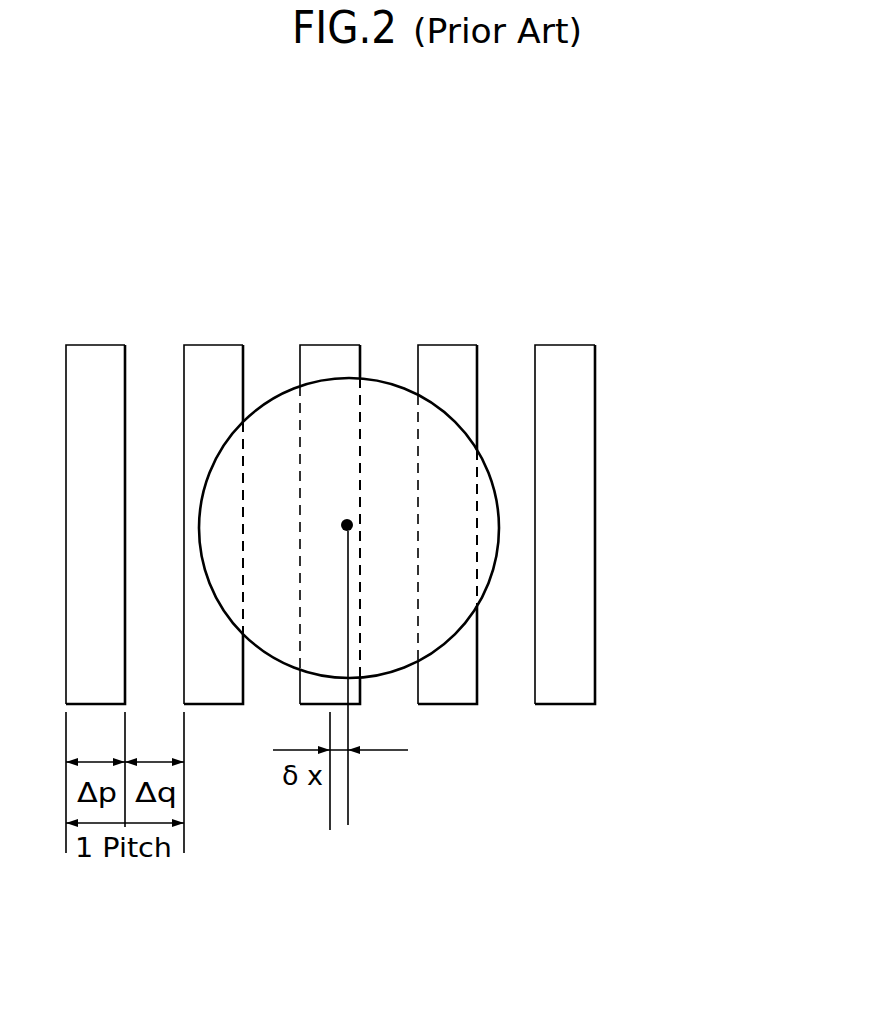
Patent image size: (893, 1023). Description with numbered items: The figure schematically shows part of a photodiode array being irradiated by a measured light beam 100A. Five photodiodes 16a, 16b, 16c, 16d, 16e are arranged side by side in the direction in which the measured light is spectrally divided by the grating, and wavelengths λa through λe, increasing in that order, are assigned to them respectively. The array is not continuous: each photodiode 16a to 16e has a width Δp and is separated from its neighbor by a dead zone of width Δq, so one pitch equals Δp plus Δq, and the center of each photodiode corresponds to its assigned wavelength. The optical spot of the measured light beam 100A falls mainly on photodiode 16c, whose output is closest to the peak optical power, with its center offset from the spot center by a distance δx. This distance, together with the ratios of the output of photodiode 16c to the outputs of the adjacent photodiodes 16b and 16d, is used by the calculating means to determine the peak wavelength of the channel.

The photodiode 16a is at (93, 345).
The photodiode 16b is at (212, 345).
The photodiode 16c is at (330, 345).
The photodiode 16d is at (445, 345).
The photodiode 16e is at (563, 345).
The measured light beam 100A is at (484, 593).